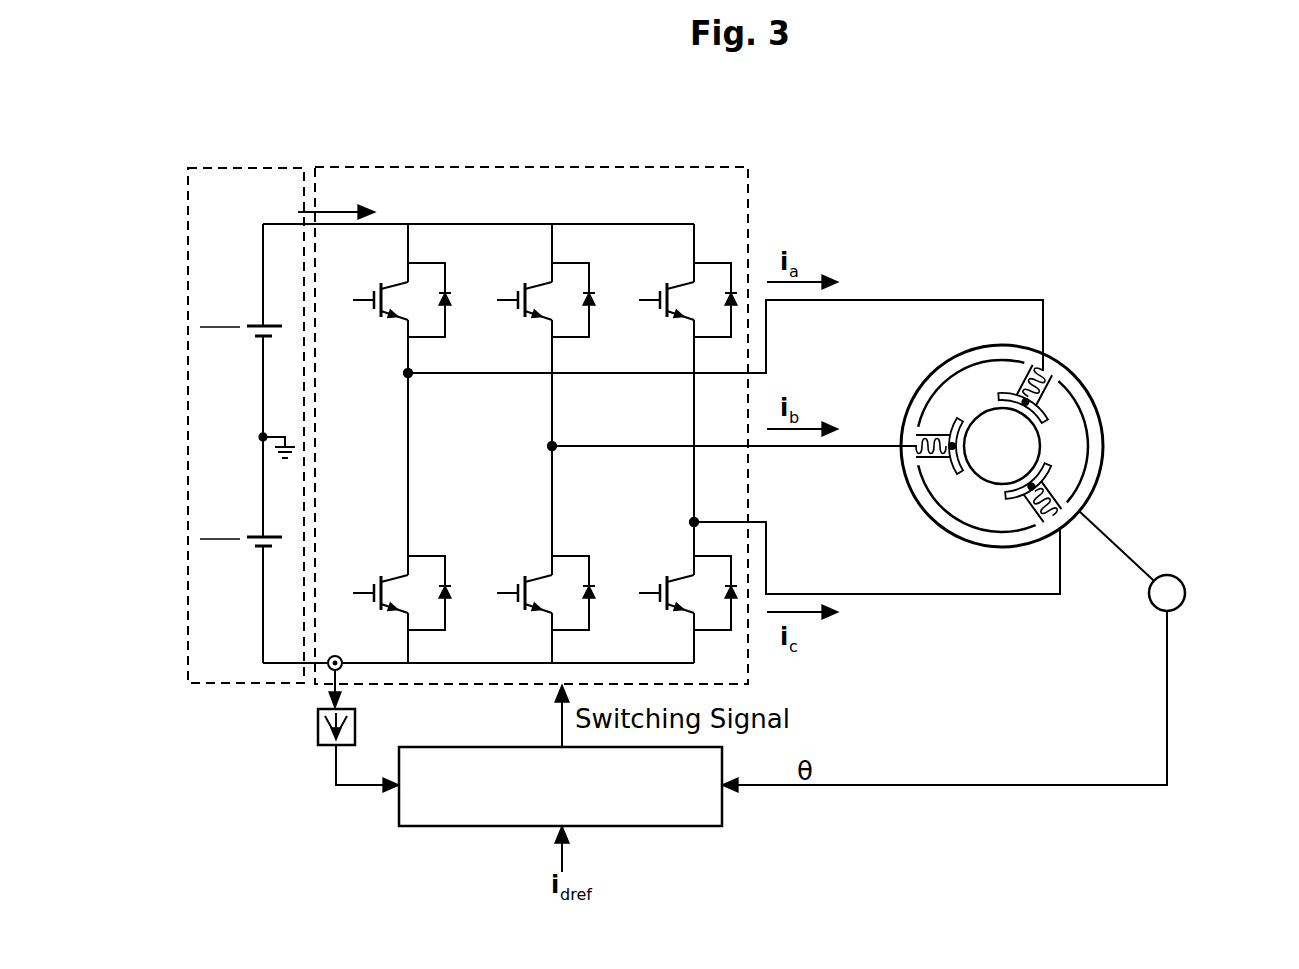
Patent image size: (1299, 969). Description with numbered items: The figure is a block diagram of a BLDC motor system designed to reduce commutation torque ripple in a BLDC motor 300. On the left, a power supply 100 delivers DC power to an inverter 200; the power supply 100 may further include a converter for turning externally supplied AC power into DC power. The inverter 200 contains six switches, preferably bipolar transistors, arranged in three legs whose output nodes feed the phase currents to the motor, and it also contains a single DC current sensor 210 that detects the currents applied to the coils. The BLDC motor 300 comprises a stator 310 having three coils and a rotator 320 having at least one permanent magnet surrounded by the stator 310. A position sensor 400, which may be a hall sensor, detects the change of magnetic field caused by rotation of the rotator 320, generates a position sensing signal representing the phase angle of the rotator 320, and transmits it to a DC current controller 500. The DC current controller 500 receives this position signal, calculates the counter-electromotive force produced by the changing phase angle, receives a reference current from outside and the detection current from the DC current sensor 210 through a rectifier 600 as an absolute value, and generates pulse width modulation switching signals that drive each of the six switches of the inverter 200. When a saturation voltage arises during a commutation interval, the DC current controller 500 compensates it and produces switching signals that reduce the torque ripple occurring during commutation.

The power supply 100 is at (258, 167).
The inverter 200 is at (585, 167).
The DC current sensor 210 is at (330, 672).
The BLDC motor 300 is at (1060, 446).
The stator 310 is at (1047, 384).
The rotator 320 is at (1030, 452).
The position sensor 400 is at (1185, 592).
The DC current controller 500 is at (465, 828).
The rectifier 600 is at (325, 747).